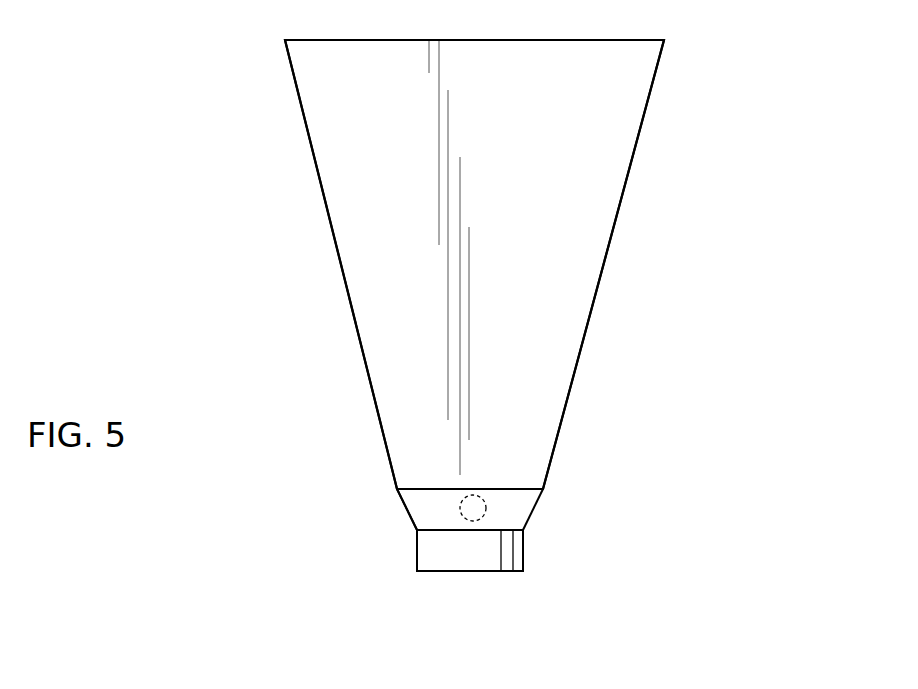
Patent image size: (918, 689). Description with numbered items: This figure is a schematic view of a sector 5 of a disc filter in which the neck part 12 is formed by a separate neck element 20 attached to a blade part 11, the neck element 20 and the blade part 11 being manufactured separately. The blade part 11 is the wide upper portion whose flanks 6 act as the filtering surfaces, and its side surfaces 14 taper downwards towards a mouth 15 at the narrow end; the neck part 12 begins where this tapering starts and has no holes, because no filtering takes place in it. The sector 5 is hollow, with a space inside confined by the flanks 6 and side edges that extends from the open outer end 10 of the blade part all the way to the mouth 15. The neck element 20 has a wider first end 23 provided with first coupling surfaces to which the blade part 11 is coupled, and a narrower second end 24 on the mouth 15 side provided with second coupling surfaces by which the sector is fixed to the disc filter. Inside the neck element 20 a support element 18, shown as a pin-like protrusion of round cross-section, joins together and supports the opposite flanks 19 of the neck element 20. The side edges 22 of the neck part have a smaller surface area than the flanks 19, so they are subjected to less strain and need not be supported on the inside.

The sector 5 is at (770, 48).
The flanks 6 is at (555, 300).
The open top end 10 is at (310, 40).
The blade part 11 is at (742, 208).
The neck part 12 is at (768, 526).
The side surfaces 14 is at (308, 138).
The mouth 15 is at (473, 572).
The support element 18 is at (460, 507).
The flanks of the neck part 19 is at (423, 516).
The neck element 20 is at (601, 543).
The side edges 22 is at (534, 512).
The first end 23 is at (408, 475).
The second end 24 is at (400, 569).